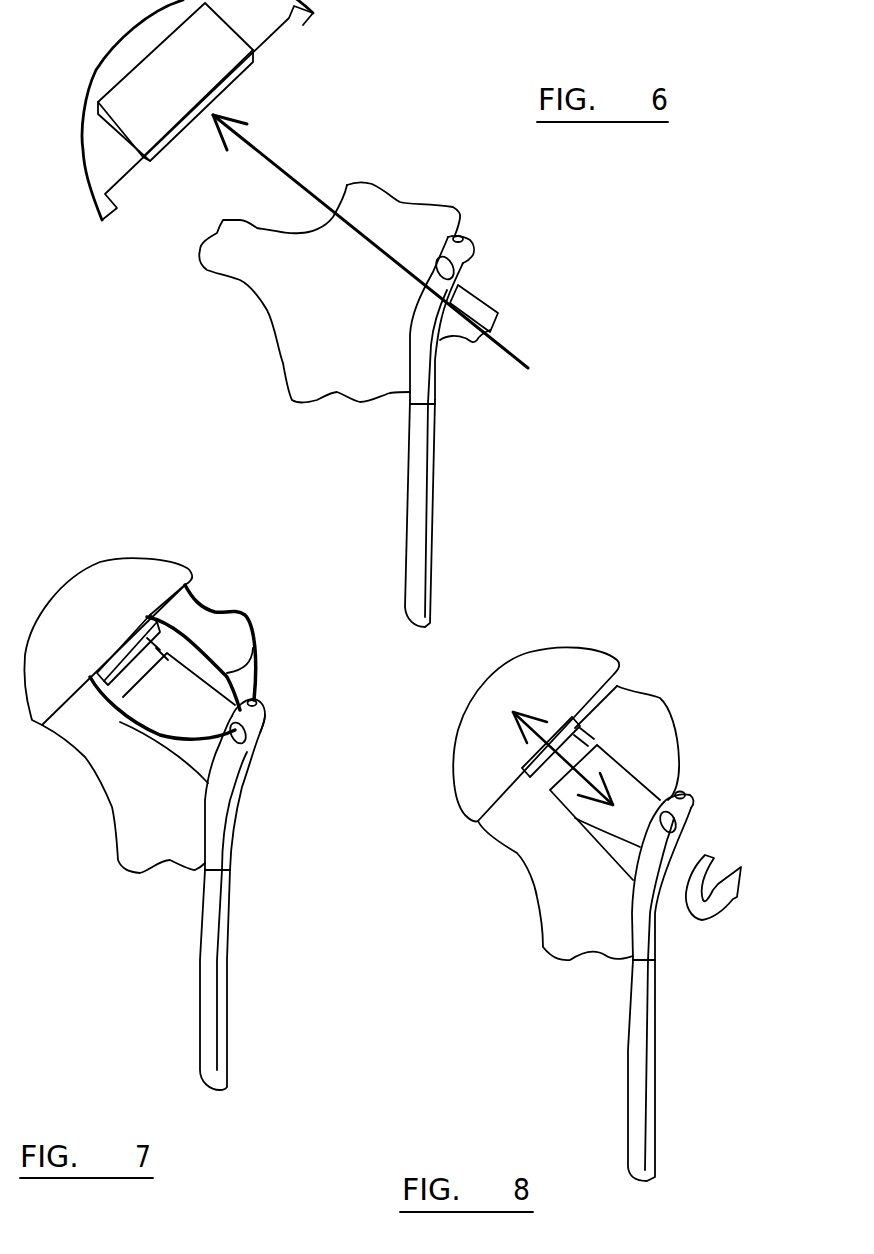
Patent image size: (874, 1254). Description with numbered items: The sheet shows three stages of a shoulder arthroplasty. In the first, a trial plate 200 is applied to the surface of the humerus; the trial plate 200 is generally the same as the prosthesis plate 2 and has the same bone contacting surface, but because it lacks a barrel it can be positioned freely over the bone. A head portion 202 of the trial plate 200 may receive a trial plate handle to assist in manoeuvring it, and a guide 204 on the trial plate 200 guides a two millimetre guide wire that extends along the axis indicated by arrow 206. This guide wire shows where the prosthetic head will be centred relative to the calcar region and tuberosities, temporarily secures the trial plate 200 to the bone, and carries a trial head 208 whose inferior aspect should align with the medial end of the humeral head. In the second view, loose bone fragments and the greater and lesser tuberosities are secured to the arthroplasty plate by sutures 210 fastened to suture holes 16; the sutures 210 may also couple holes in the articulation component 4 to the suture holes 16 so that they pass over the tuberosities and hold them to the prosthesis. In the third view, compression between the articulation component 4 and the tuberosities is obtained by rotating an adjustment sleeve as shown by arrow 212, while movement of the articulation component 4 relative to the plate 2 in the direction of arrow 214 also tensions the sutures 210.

In FIG. 7, the prosthesis plate 2 is at (272, 894).
In FIG. 8, the prosthesis plate 2 is at (642, 1057).
In FIG. 7, the articulation component 4 is at (78, 612).
In FIG. 8, the articulation component 4 is at (540, 687).
In FIG. 7, the suture holes 16 is at (250, 748).
In FIG. 6, the trial plate 200 is at (500, 410).
In FIG. 6, the head portion 202 is at (473, 242).
In FIG. 6, the guide 204 is at (474, 308).
In FIG. 6, the arrow 206 is at (298, 186).
In FIG. 6, the trial head 208 is at (150, 50).
In FIG. 7, the sutures 210 is at (221, 603).
In FIG. 8, the arrow 212 is at (708, 918).
In FIG. 8, the arrow 214 is at (586, 738).